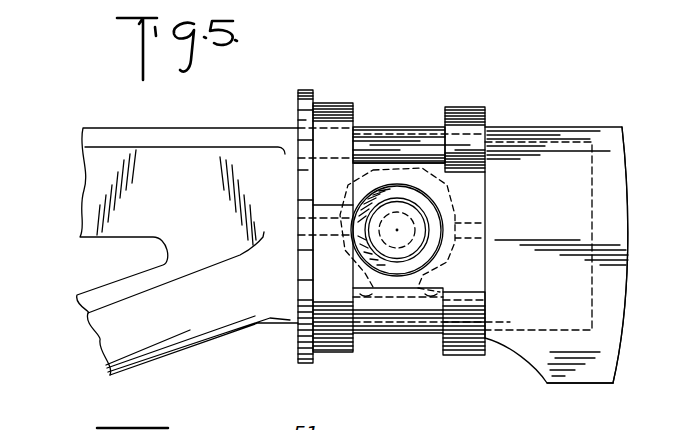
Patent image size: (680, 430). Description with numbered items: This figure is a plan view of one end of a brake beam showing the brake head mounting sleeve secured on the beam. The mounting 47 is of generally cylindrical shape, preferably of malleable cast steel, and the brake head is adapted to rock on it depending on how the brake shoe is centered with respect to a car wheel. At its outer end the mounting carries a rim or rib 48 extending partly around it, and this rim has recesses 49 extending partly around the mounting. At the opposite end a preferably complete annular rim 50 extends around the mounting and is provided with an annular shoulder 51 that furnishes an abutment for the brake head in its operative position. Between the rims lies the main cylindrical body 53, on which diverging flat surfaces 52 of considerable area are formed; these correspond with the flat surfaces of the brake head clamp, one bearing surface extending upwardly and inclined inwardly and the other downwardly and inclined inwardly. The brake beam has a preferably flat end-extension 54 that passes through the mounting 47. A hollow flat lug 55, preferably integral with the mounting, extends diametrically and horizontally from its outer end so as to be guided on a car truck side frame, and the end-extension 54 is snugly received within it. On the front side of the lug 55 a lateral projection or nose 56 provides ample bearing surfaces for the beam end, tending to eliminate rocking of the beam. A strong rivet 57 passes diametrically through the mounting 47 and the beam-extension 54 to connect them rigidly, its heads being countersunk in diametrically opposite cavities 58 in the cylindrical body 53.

The mounting 47 is at (472, 101).
The rim or rib 48 is at (488, 115).
The recesses 49 is at (474, 191).
The annular rim 50 is at (338, 105).
The annular shoulder 51 is at (316, 78).
The flat surfaces 52 is at (403, 114).
The main cylindrical body 53 is at (398, 315).
The end-extension 54 is at (277, 198).
The flat lug 55 is at (604, 140).
The lateral projection or nose 56 is at (587, 373).
The rivet 57 is at (427, 222).
The cavities 58 is at (426, 255).